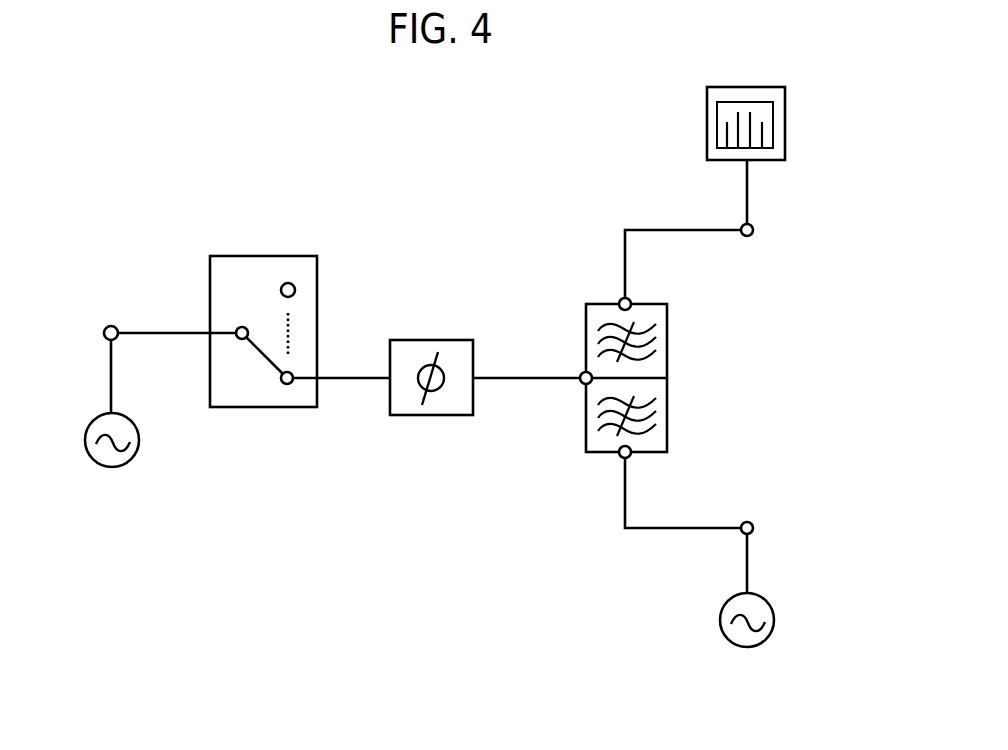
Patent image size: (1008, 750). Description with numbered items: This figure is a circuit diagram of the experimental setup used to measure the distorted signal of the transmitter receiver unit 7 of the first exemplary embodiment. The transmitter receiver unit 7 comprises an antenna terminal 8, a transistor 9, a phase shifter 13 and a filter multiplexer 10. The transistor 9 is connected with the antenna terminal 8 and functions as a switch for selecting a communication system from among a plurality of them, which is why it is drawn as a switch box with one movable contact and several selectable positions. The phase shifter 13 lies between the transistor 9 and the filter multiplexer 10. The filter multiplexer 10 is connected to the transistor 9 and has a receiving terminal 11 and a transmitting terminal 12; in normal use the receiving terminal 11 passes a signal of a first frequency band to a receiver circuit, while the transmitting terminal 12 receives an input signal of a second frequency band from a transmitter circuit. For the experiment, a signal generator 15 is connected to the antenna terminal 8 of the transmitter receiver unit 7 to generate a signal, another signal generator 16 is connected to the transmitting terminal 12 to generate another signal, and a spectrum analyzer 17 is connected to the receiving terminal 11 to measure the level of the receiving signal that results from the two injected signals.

The transmitter receiver unit 7 is at (165, 257).
The antenna terminal 8 is at (106, 323).
The transistor 9 is at (260, 255).
The filter multiplexer 10 is at (668, 403).
The receiving terminal 11 is at (755, 226).
The transmitting terminal 12 is at (760, 528).
The phase shifter 13 is at (427, 340).
The signal generator 15 is at (113, 470).
The signal generator 16 is at (775, 622).
The spectrum analyzer 17 is at (786, 127).